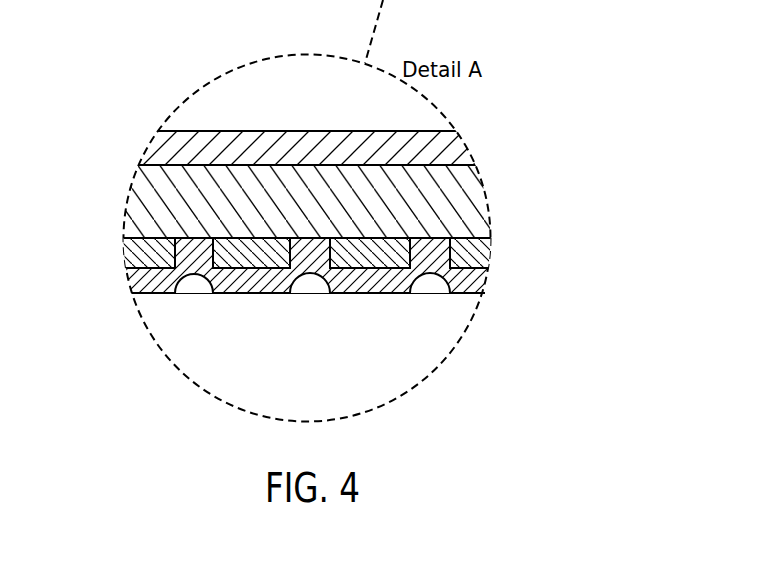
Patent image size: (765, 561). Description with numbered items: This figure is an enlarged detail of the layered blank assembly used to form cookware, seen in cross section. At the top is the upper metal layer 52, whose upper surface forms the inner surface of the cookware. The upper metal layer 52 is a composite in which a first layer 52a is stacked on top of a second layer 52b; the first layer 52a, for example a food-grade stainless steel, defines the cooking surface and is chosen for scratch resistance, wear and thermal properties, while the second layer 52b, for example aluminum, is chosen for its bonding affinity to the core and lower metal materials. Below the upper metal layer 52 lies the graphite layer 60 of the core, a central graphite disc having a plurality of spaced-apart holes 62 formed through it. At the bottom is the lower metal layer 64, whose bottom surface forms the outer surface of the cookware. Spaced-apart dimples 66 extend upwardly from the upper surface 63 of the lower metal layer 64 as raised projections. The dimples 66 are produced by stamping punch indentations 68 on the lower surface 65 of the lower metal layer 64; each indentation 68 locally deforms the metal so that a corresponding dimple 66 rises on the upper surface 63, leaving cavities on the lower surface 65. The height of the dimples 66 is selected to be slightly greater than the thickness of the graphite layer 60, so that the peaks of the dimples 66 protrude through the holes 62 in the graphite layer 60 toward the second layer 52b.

The upper metal layer 52 is at (308, 165).
The first layer 52a is at (462, 138).
The second layer 52b is at (488, 203).
The graphite layer 60 is at (489, 258).
The holes 62 is at (410, 254).
The upper surface 63 is at (131, 262).
The lower metal layer 64 is at (482, 289).
The lower surface 65 is at (143, 296).
The dimples 66 is at (200, 249).
The punch indentations 68 is at (178, 292).